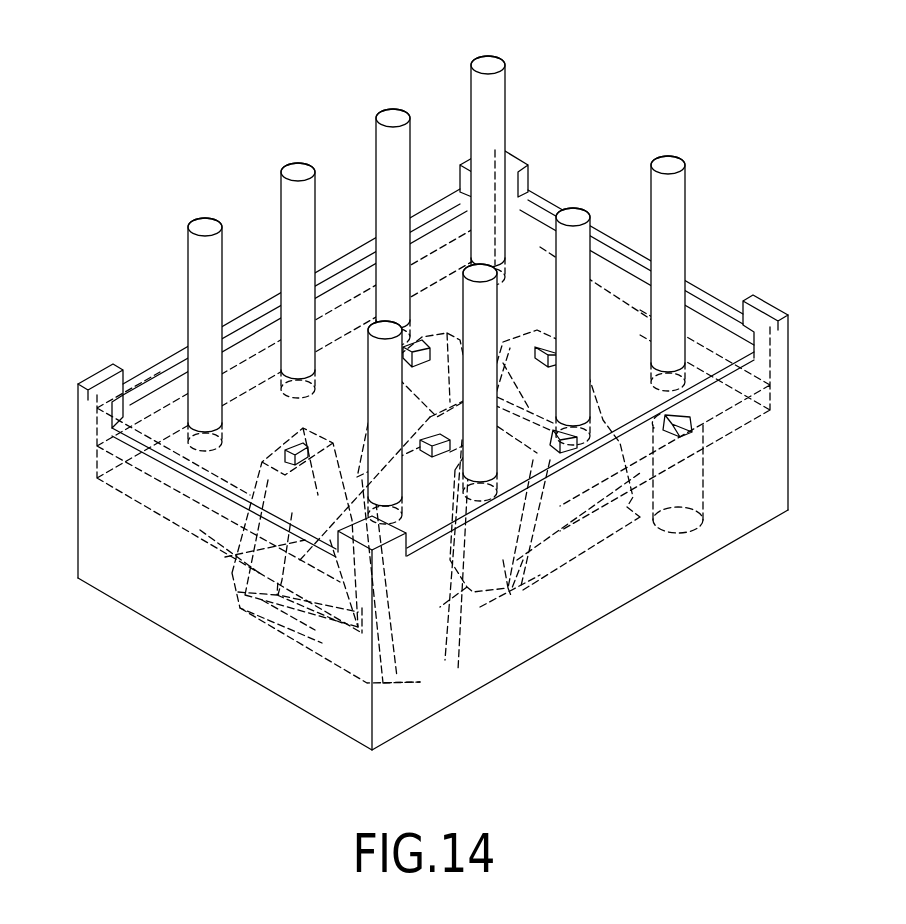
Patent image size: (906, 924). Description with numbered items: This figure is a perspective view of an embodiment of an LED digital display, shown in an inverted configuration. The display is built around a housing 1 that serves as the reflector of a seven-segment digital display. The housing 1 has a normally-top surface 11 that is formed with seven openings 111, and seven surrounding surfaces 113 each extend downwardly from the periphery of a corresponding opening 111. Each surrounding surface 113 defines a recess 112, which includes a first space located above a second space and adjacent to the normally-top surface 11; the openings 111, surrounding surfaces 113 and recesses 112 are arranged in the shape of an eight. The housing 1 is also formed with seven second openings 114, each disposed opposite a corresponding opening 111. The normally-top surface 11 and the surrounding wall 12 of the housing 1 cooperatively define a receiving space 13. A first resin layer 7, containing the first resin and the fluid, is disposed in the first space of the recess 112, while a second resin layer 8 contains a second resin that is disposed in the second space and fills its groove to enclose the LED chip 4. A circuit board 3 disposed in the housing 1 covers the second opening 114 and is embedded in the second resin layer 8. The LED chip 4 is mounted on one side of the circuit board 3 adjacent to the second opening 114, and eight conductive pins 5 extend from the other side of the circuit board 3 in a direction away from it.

The housing 1 is at (201, 671).
The circuit board 3 is at (535, 247).
The LED chip 4 is at (548, 332).
The conductive pins 5 is at (205, 226).
The first resin layer 7 is at (450, 627).
The second resin layer 8 is at (603, 256).
The normally-top surface 11 is at (142, 614).
The surrounding wall 12 is at (121, 557).
The receiving space 13 is at (160, 380).
The opening 111 is at (335, 667).
The recess 112 is at (315, 630).
The surrounding surface 113 is at (560, 430).
The second opening 114 is at (410, 343).